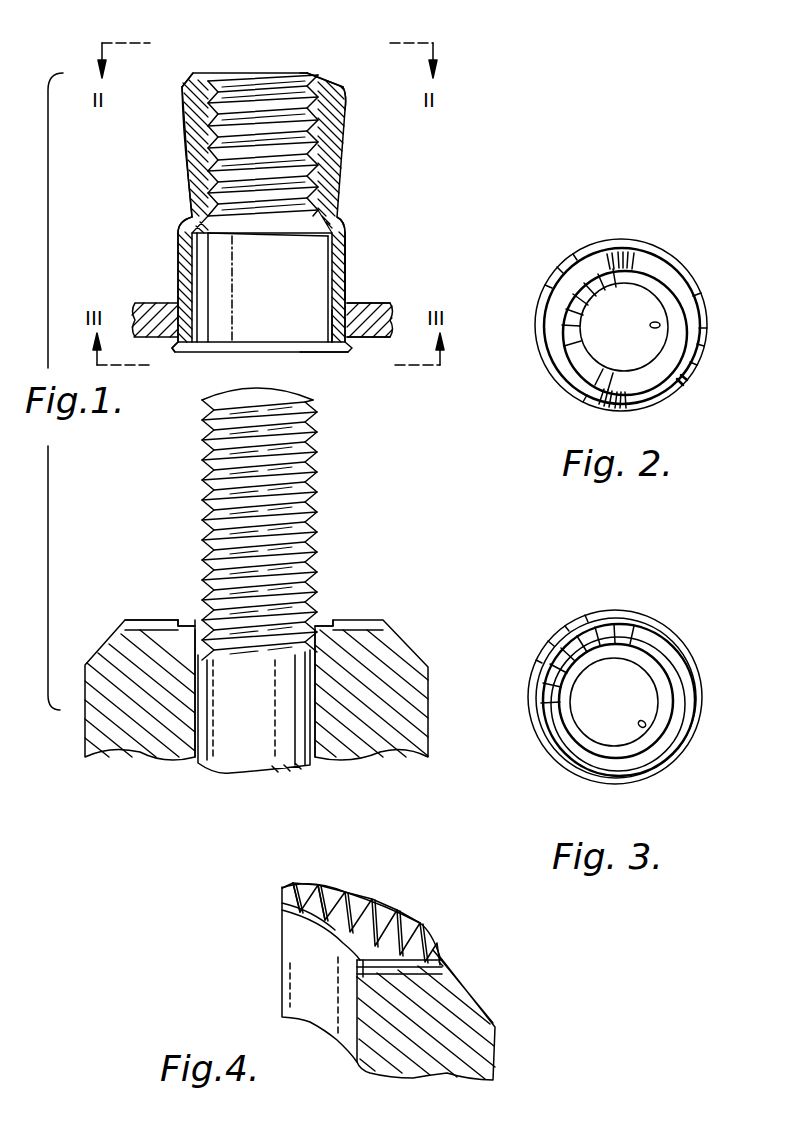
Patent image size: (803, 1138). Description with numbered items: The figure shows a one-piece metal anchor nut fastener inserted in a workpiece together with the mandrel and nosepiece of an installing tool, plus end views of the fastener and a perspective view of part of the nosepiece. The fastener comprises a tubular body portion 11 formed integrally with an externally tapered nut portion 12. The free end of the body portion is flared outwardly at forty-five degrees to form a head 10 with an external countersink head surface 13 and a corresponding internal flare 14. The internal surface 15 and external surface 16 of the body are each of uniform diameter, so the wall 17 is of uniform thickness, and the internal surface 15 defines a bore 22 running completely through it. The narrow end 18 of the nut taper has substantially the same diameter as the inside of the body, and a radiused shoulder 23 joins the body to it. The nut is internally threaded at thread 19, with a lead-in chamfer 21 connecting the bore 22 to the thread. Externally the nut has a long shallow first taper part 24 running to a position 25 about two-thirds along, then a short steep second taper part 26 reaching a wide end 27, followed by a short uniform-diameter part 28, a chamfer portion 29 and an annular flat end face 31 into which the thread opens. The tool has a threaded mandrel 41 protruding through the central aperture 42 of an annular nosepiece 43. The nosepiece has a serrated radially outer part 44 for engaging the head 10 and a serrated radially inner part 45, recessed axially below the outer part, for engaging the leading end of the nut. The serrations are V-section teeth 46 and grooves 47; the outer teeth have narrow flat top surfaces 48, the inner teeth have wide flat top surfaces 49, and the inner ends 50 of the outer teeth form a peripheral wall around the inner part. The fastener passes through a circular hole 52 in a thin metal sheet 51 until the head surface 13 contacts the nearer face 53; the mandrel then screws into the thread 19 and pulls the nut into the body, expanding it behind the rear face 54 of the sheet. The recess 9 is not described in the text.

In FIG. 3, the recess 9 is at (645, 728).
In FIG. 1, the head 10 is at (173, 352).
In FIG. 3, the head 10 is at (683, 683).
In FIG. 1, the tubular body portion 11 is at (178, 300).
In FIG. 1, the nut portion 12 is at (190, 177).
In FIG. 1, the external countersink head surface 13 is at (170, 342).
In FIG. 1, the internal flare 14 is at (330, 350).
In FIG. 3, the internal flare 14 is at (660, 665).
In FIG. 1, the internal surface 15 is at (330, 282).
In FIG. 1, the external surface 16 is at (347, 240).
In FIG. 1, the wall 17 is at (345, 268).
In FIG. 1, the narrow end 18 is at (343, 215).
In FIG. 1, the thread 19 is at (312, 165).
In FIG. 2, the thread 19 is at (660, 325).
In FIG. 1, the lead-in chamfer 21 is at (214, 233).
In FIG. 3, the lead-in chamfer 21 is at (632, 655).
In FIG. 1, the bore 22 is at (212, 248).
In FIG. 1, the shoulder 23 is at (182, 228).
In FIG. 1, the first taper part 24 is at (195, 192).
In FIG. 1, the wide end of shallow taper 25 is at (190, 125).
In FIG. 1, the second taper part 26 is at (185, 97).
In FIG. 1, the wide end of steep taper 27 is at (185, 82).
In FIG. 1, the uniform diameter part 28 is at (348, 92).
In FIG. 2, the uniform diameter part 28 is at (698, 368).
In FIG. 1, the chamfer portion 29 is at (345, 80).
In FIG. 2, the chamfer portion 29 is at (680, 272).
In FIG. 1, the end face 31 is at (330, 70).
In FIG. 2, the end face 31 is at (634, 262).
In FIG. 1, the threaded mandrel 41 is at (204, 498).
In FIG. 1, the central aperture 42 is at (205, 633).
In FIG. 1, the nosepiece 43 is at (152, 620).
In FIG. 4, the nosepiece 43 is at (425, 921).
In FIG. 1, the radially outer part 44 is at (135, 622).
In FIG. 4, the radially outer part 44 is at (370, 905).
In FIG. 1, the radially inner part 45 is at (188, 625).
In FIG. 4, the radially inner part 45 is at (380, 975).
In FIG. 4, the teeth 46 is at (335, 885).
In FIG. 4, the grooves 47 is at (297, 925).
In FIG. 4, the narrow flat top surfaces 48 is at (420, 952).
In FIG. 4, the wide flat top surfaces 49 is at (288, 925).
In FIG. 1, the inner ends of teeth 50 is at (330, 625).
In FIG. 4, the inner ends of teeth 50 is at (290, 915).
In FIG. 1, the metal sheet 51 is at (378, 315).
In FIG. 1, the hole 52 is at (330, 325).
In FIG. 1, the nearer face 53 is at (365, 340).
In FIG. 1, the rear face 54 is at (360, 305).